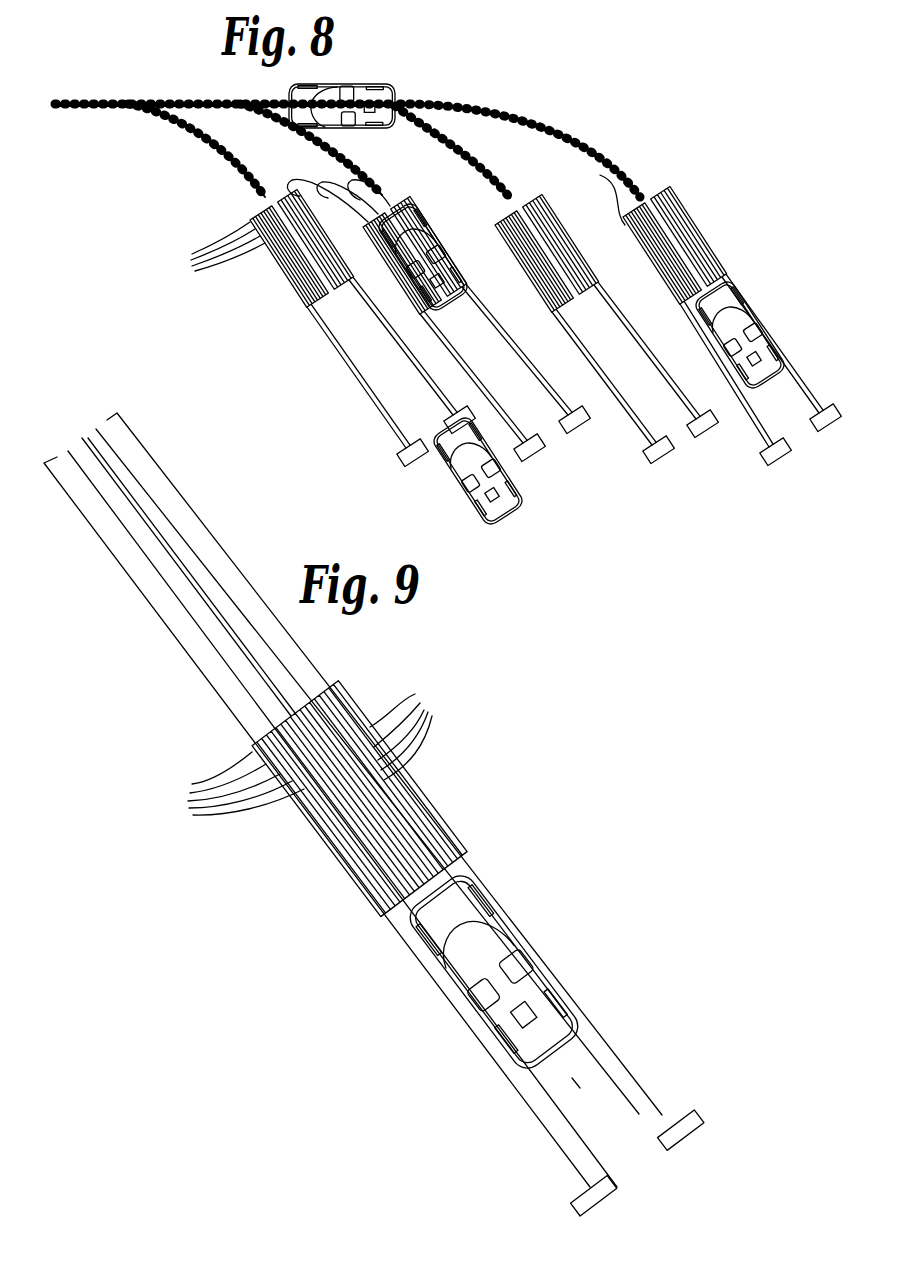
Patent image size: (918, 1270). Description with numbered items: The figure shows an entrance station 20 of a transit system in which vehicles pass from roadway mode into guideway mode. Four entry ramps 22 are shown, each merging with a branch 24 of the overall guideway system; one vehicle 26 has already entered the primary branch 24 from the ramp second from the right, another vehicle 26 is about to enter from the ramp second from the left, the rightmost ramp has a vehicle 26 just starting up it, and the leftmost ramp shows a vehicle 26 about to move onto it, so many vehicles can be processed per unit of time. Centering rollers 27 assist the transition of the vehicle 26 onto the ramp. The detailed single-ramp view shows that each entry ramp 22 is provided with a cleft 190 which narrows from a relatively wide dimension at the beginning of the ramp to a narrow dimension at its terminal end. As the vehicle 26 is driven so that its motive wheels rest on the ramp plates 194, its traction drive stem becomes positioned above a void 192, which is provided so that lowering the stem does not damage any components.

In FIG. 8, the entrance station 20 is at (716, 172).
In FIG. 8, the entry ramp 22 is at (455, 388).
In FIG. 9, the entry ramp 22 is at (556, 816).
In FIG. 8, the branch 24 is at (82, 106).
In FIG. 8, the vehicle 26 is at (373, 92).
In FIG. 9, the vehicle 26 is at (450, 975).
In FIG. 8, the centering rollers 27 is at (396, 217).
In FIG. 9, the centering rollers 27 is at (307, 750).
In FIG. 8, the cleft 190 is at (315, 285).
In FIG. 9, the cleft 190 is at (373, 832).
In FIG. 9, the void 192 is at (576, 1066).
In FIG. 9, the ramp plates 194 is at (595, 1045).